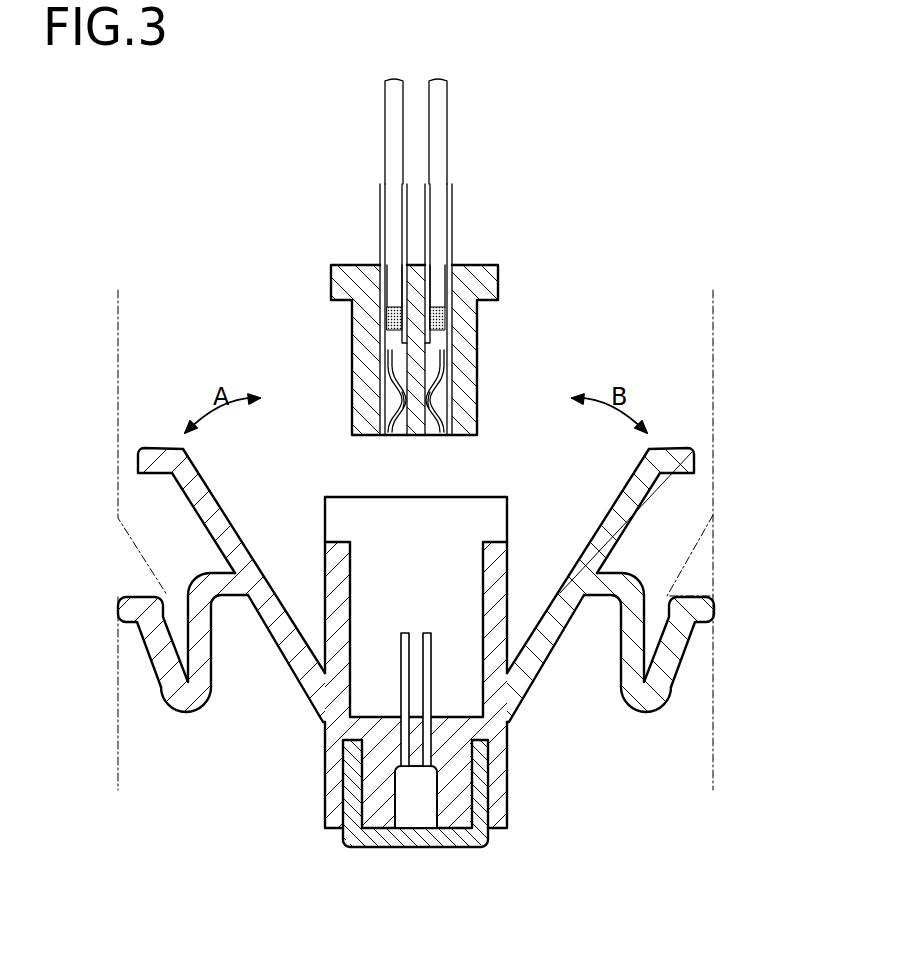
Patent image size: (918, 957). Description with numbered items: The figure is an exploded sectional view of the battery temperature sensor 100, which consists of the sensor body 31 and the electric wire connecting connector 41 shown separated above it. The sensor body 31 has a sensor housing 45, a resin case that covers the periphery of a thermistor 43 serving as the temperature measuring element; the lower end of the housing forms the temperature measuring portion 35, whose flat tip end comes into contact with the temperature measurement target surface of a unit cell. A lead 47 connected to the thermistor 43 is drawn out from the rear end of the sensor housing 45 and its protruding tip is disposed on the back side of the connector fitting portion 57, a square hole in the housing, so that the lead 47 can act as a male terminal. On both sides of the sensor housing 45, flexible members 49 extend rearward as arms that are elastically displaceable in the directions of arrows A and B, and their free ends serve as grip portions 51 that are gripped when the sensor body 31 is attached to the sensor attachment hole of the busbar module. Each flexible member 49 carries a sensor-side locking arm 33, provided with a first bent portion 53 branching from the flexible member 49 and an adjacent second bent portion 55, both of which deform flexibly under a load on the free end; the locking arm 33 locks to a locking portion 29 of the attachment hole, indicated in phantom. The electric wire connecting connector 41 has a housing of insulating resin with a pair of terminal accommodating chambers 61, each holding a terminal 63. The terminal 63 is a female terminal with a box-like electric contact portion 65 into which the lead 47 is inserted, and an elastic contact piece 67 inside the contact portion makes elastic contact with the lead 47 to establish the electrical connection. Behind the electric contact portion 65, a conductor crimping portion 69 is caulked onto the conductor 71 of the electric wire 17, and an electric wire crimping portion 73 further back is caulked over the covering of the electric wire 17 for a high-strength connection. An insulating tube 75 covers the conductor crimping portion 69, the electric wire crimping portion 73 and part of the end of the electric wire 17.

The electric wire 17 is at (389, 121).
The locking portion 29 is at (130, 530).
The sensor body 31 is at (412, 600).
The sensor-side locking arm 33 is at (142, 657).
The temperature measuring portion 35 is at (378, 849).
The electric wire connecting connector 41 is at (389, 329).
The thermistor 43 is at (424, 820).
The sensor housing 45 is at (328, 572).
The lead 47 is at (399, 652).
The flexible member 49 is at (236, 535).
The grip portion 51 is at (149, 447).
The first bent portion 53 is at (207, 585).
The second bent portion 55 is at (191, 711).
The connector fitting portion 57 is at (457, 528).
The terminal accommodating chamber 61 is at (380, 437).
The terminal 63 is at (374, 393).
The electric contact portion 65 is at (390, 405).
The elastic contact piece 67 is at (413, 437).
The conductor crimping portion 69 is at (385, 320).
The conductor 71 is at (398, 330).
The electric wire crimping portion 73 is at (423, 303).
The insulating tube 75 is at (381, 204).
The battery temperature sensor 100 is at (202, 167).